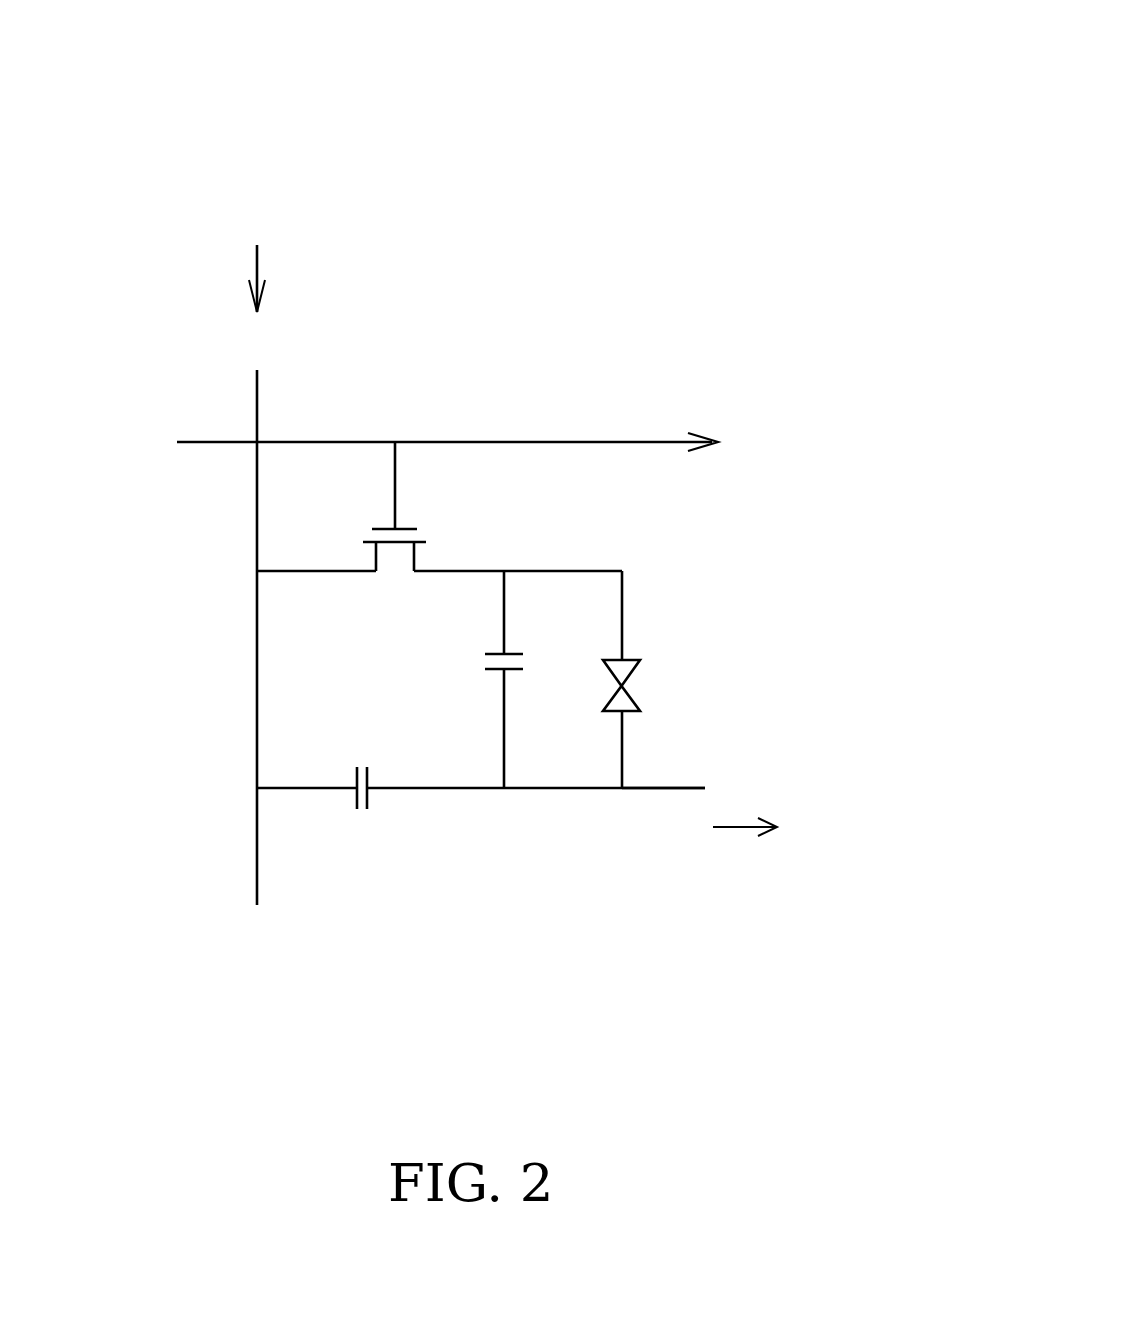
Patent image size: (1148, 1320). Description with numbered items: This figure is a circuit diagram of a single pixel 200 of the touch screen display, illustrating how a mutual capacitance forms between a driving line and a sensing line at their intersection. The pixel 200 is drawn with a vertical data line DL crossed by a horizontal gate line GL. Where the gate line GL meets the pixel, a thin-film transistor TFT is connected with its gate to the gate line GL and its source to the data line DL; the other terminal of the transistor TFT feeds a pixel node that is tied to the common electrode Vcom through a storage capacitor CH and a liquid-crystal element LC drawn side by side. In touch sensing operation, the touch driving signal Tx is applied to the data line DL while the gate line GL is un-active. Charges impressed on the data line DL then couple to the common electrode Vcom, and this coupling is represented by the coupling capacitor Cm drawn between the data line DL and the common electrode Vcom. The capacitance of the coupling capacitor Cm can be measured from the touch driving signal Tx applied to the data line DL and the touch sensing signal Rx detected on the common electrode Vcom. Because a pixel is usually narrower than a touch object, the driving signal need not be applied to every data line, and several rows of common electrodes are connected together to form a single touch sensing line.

The pixel 200 is at (748, 128).
The touch driving signal Tx is at (257, 258).
The data line DL is at (260, 617).
The gate line GL is at (417, 438).
The thin film transistor TFT is at (439, 506).
The storage capacitor CH is at (480, 679).
The liquid crystal capacitor LC is at (641, 679).
The coupling capacitor Cm is at (481, 768).
The common electrode Vcom is at (710, 781).
The touch sensing signal Rx is at (770, 827).